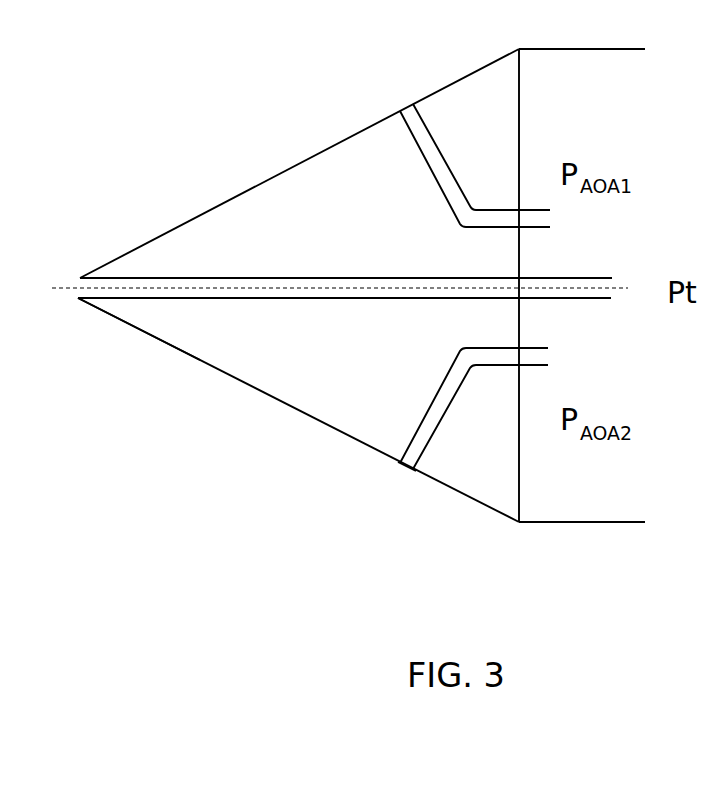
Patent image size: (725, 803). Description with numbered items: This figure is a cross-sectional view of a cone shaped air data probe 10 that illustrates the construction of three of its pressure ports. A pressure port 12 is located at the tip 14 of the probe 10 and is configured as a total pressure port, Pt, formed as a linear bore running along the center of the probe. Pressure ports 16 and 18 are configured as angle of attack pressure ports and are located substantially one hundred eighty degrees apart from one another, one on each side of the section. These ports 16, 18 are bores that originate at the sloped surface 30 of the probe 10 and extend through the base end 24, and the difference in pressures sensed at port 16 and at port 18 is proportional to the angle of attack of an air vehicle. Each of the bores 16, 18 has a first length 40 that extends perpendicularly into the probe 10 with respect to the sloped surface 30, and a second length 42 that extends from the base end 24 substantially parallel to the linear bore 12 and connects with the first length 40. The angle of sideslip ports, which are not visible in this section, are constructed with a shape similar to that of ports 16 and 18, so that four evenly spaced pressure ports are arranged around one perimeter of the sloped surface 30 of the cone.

The air data probe 10 is at (238, 70).
The pressure port 12 is at (82, 280).
The tip 14 is at (118, 322).
The pressure port 16 is at (405, 108).
The pressure port 18 is at (403, 463).
The base end 24 is at (520, 112).
The sloped surface 30 is at (275, 400).
The first length 40 is at (426, 162).
The second length 42 is at (533, 228).